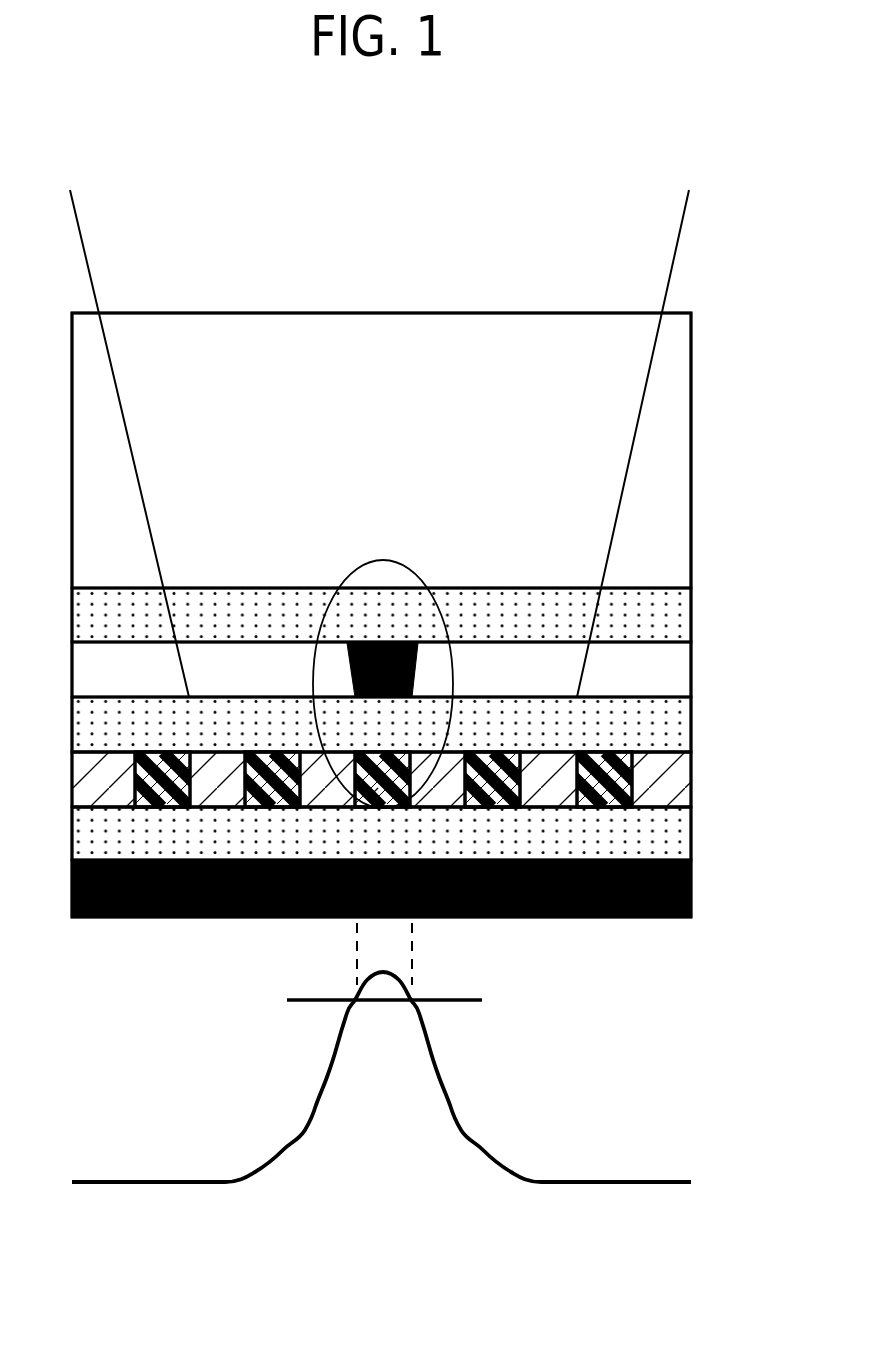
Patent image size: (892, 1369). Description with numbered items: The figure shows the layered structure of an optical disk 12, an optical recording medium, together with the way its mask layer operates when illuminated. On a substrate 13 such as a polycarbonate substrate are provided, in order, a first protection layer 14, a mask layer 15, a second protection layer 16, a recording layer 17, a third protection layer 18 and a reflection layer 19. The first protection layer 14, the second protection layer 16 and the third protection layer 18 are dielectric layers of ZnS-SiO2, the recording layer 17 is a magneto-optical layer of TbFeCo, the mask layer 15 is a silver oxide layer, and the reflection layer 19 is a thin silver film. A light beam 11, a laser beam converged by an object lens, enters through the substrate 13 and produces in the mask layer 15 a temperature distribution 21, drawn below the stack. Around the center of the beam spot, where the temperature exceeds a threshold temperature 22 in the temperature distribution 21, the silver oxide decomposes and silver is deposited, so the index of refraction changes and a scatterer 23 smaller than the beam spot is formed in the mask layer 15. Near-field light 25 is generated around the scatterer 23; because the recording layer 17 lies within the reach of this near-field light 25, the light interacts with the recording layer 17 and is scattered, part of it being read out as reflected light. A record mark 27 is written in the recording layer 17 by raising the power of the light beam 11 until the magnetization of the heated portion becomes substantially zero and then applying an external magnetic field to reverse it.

The light beam 11 is at (678, 245).
The optical disk 12 is at (752, 383).
The substrate 13 is at (691, 457).
The first protection layer 14 is at (692, 612).
The mask layer 15 is at (692, 667).
The second protection layer 16 is at (692, 722).
The recording layer 17 is at (692, 775).
The third protection layer 18 is at (692, 830).
The reflection layer 19 is at (692, 885).
The temperature distribution 21 is at (450, 1103).
The threshold temperature 22 is at (455, 1000).
The scatterer 23 is at (360, 640).
The near-field light 25 is at (405, 566).
The record mark 27 is at (375, 792).